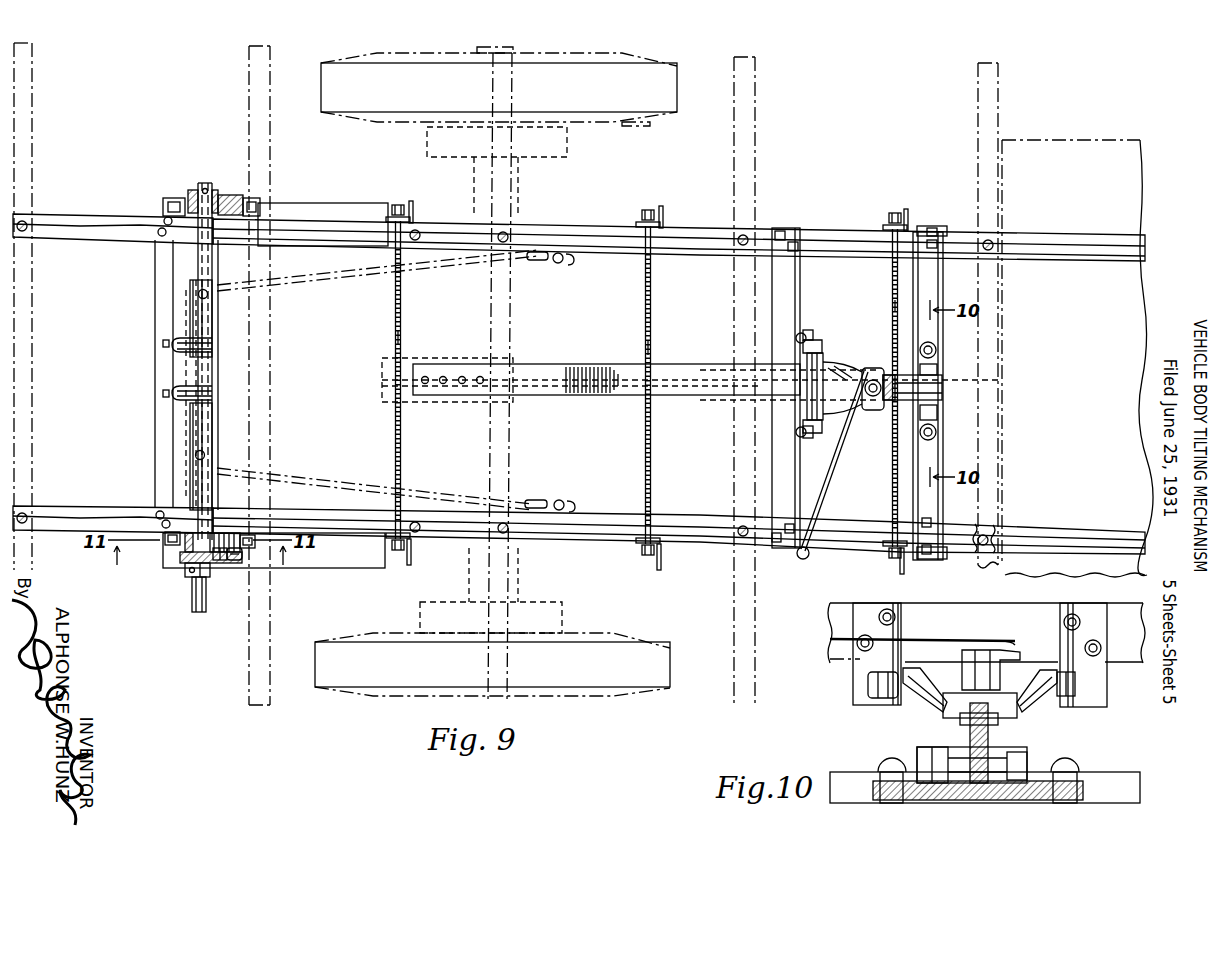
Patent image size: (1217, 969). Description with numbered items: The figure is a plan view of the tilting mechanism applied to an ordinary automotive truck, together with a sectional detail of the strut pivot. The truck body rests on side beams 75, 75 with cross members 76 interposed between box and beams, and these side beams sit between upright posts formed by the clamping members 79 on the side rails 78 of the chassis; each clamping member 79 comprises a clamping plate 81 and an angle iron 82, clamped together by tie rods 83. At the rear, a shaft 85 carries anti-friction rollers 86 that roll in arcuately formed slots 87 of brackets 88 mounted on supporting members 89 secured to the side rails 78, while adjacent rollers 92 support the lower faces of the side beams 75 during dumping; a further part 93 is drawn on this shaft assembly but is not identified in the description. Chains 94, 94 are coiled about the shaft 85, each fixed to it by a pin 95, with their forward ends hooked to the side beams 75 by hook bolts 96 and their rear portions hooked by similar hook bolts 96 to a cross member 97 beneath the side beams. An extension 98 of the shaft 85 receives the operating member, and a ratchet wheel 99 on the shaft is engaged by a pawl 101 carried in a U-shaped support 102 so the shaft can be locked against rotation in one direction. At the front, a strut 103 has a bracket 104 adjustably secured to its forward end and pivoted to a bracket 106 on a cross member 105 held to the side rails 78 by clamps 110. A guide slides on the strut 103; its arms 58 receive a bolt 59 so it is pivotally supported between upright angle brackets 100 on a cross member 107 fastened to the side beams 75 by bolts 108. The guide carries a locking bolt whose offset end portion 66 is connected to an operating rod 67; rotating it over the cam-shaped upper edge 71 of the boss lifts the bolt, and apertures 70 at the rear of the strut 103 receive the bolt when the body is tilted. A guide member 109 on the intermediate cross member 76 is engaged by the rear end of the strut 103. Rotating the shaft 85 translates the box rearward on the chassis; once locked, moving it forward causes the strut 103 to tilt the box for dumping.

In FIG. 9, the rearwardly extending spaced apart arms 58 is at (822, 345).
In FIG. 10, the rearwardly extending spaced apart arms 58 is at (915, 668).
In FIG. 9, the bolt or rod 59 is at (807, 404).
In FIG. 10, the bolt or rod 59 is at (868, 684).
In FIG. 9, the offset end portion 66 is at (870, 376).
In FIG. 10, the offset end portion 66 is at (1015, 648).
In FIG. 9, the operating rod 67 is at (826, 502).
In FIG. 10, the operating rod 67 is at (830, 643).
In FIG. 9, the apertures 70 is at (474, 364).
In FIG. 9, the upper edge 71 is at (875, 410).
In FIG. 9, the side beams 75 is at (90, 214).
In FIG. 9, the cross members 76 is at (33, 138).
In FIG. 9, the side rails 78 is at (228, 247).
In FIG. 9, the upright clamping members 79 is at (424, 209).
In FIG. 9, the clamping plate 81 is at (394, 262).
In FIG. 9, the angle iron 82 is at (411, 201).
In FIG. 9, the tie rods 83 is at (396, 336).
In FIG. 9, the shaft 85 is at (226, 386).
In FIG. 9, the anti-friction rollers 86 is at (222, 194).
In FIG. 9, the arcuately formed slots 87 is at (214, 203).
In FIG. 9, the brackets 88 is at (243, 205).
In FIG. 9, the supporting members 89 is at (343, 200).
In FIG. 9, the anti-friction rollers 92 is at (198, 232).
In FIG. 9, the rack bar 93 is at (190, 365).
In FIG. 9, the flexible elements or chains 94 is at (368, 275).
In FIG. 9, the pins 95 is at (209, 293).
In FIG. 9, the hook bolts 96 is at (178, 343).
In FIG. 9, the cross member 97 is at (160, 435).
In FIG. 9, the extension 98 is at (194, 609).
In FIG. 9, the ratchet wheel 99 is at (190, 565).
In FIG. 9, the upright angle brackets 100 is at (800, 340).
In FIG. 10, the upright angle brackets 100 is at (862, 607).
In FIG. 9, the pawl 101 is at (218, 562).
In FIG. 9, the U-shaped support 102 is at (240, 560).
In FIG. 9, the strut 103 is at (598, 388).
In FIG. 10, the strut 103 is at (943, 710).
In FIG. 9, the bracket 104 is at (945, 381).
In FIG. 10, the bracket 104 is at (990, 740).
In FIG. 9, the cross member 105 is at (940, 512).
In FIG. 10, the cross member 105 is at (852, 772).
In FIG. 9, the bracket 106 is at (935, 362).
In FIG. 10, the bracket 106 is at (960, 800).
In FIG. 9, the cross member 107 is at (800, 302).
In FIG. 10, the cross member 107 is at (1018, 607).
In FIG. 9, the bolts 108 is at (793, 242).
In FIG. 9, the guide member 109 is at (382, 400).
In FIG. 9, the clamps 110 is at (930, 226).